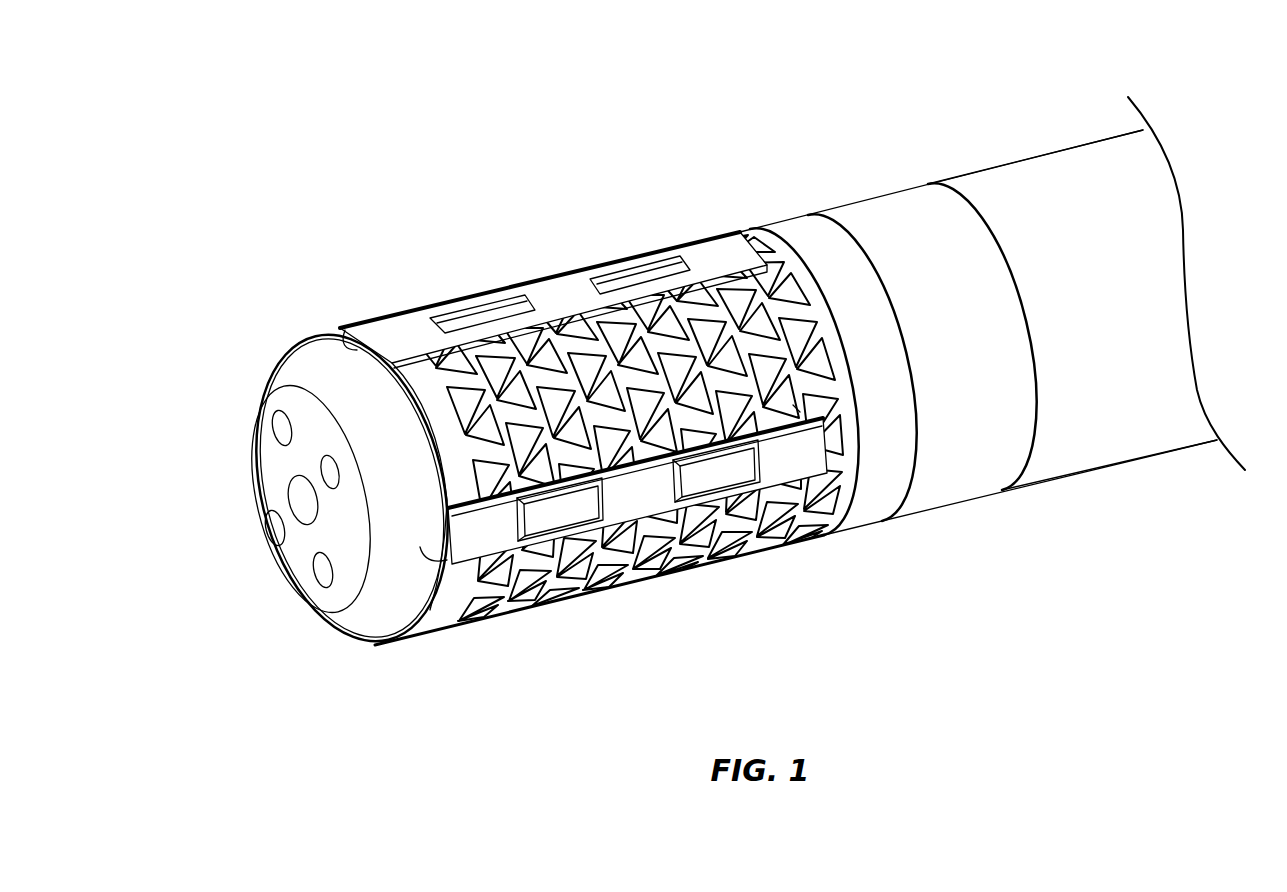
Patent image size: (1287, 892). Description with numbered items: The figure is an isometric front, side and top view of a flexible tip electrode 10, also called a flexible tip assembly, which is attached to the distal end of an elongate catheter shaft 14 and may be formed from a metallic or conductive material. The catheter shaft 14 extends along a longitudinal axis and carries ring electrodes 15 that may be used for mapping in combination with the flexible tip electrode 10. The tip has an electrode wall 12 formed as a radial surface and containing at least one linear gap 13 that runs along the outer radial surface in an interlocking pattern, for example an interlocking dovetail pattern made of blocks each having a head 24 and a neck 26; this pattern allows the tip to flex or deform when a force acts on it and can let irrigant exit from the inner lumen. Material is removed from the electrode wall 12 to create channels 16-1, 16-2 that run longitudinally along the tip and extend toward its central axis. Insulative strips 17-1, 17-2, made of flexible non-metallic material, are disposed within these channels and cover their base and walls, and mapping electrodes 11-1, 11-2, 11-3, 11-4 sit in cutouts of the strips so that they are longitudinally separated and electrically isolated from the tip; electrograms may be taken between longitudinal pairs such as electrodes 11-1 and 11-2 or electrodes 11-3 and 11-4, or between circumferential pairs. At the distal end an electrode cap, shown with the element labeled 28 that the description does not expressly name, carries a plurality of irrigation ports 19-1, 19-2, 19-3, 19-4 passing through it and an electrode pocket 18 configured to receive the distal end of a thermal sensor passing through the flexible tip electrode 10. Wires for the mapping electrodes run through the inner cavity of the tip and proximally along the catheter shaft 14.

The flexible tip electrode 10 is at (526, 157).
The mapping electrode 11-1 is at (484, 308).
The mapping electrode 11-2 is at (638, 275).
The mapping electrode 11-3 is at (565, 515).
The mapping electrode 11-4 is at (722, 477).
The electrode wall 12 is at (779, 285).
The linear gap 13 is at (882, 521).
The catheter shaft 14 is at (1030, 172).
The ring electrodes 15 is at (877, 222).
The channel 16-1 is at (338, 330).
The channel 16-2 is at (447, 540).
The insulative strip 17-1 is at (553, 278).
The insulative strip 17-2 is at (637, 564).
The electrode pocket 18 is at (298, 492).
The irrigation port 19-1 is at (278, 426).
The irrigation port 19-2 is at (328, 470).
The irrigation port 19-3 is at (280, 528).
The irrigation port 19-4 is at (323, 570).
The head 24 is at (824, 535).
The neck 26 is at (793, 405).
The end cap 28 is at (319, 484).